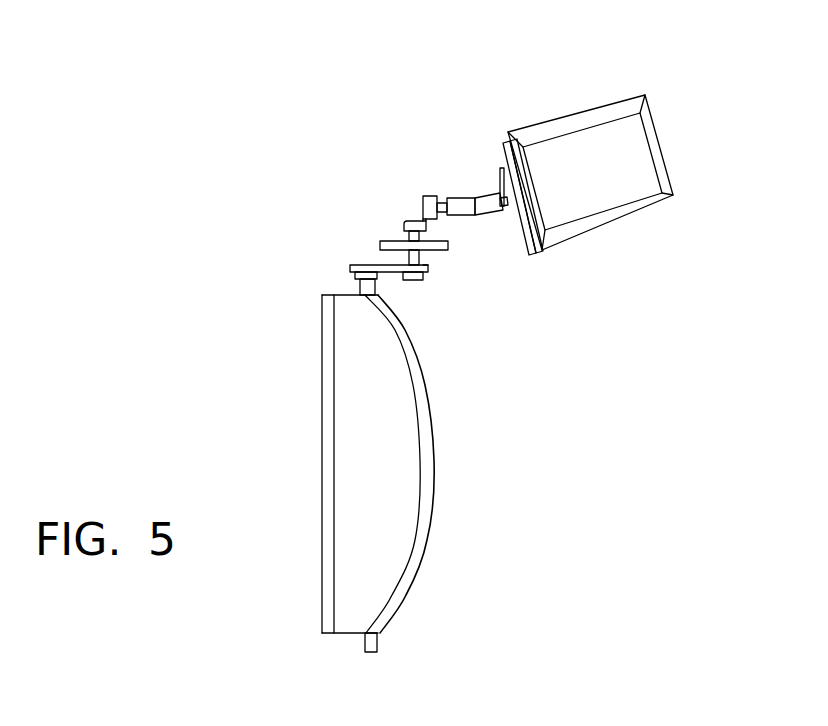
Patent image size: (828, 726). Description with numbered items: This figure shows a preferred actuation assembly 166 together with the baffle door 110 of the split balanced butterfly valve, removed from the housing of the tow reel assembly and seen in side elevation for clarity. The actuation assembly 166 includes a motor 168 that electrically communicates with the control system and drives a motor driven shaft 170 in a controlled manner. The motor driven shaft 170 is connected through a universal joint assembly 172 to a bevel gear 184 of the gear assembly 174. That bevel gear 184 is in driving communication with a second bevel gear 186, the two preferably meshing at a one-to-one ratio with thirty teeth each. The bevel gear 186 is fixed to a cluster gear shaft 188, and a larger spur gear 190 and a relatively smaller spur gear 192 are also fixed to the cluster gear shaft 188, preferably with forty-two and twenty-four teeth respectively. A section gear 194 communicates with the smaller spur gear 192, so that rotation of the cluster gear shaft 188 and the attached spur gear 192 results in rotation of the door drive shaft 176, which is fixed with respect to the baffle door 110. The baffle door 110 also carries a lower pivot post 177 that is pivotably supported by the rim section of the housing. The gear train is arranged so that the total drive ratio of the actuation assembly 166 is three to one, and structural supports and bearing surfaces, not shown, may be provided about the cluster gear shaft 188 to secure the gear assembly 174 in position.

The baffle door 110 is at (395, 445).
The actuation assembly 166 is at (468, 330).
The motor 168 is at (608, 187).
The motor driven shaft 170 is at (505, 197).
The universal joint assembly 172 is at (483, 217).
The gear assembly 174 is at (338, 186).
The door drive shaft 176 is at (380, 294).
The lower pivot post 177 is at (377, 641).
The bevel gear 184 is at (430, 196).
The bevel gear 186 is at (403, 222).
The cluster gear shaft 188 is at (382, 235).
The larger spur gear 190 is at (380, 247).
The smaller spur gear 192 is at (422, 268).
The section gear 194 is at (353, 266).